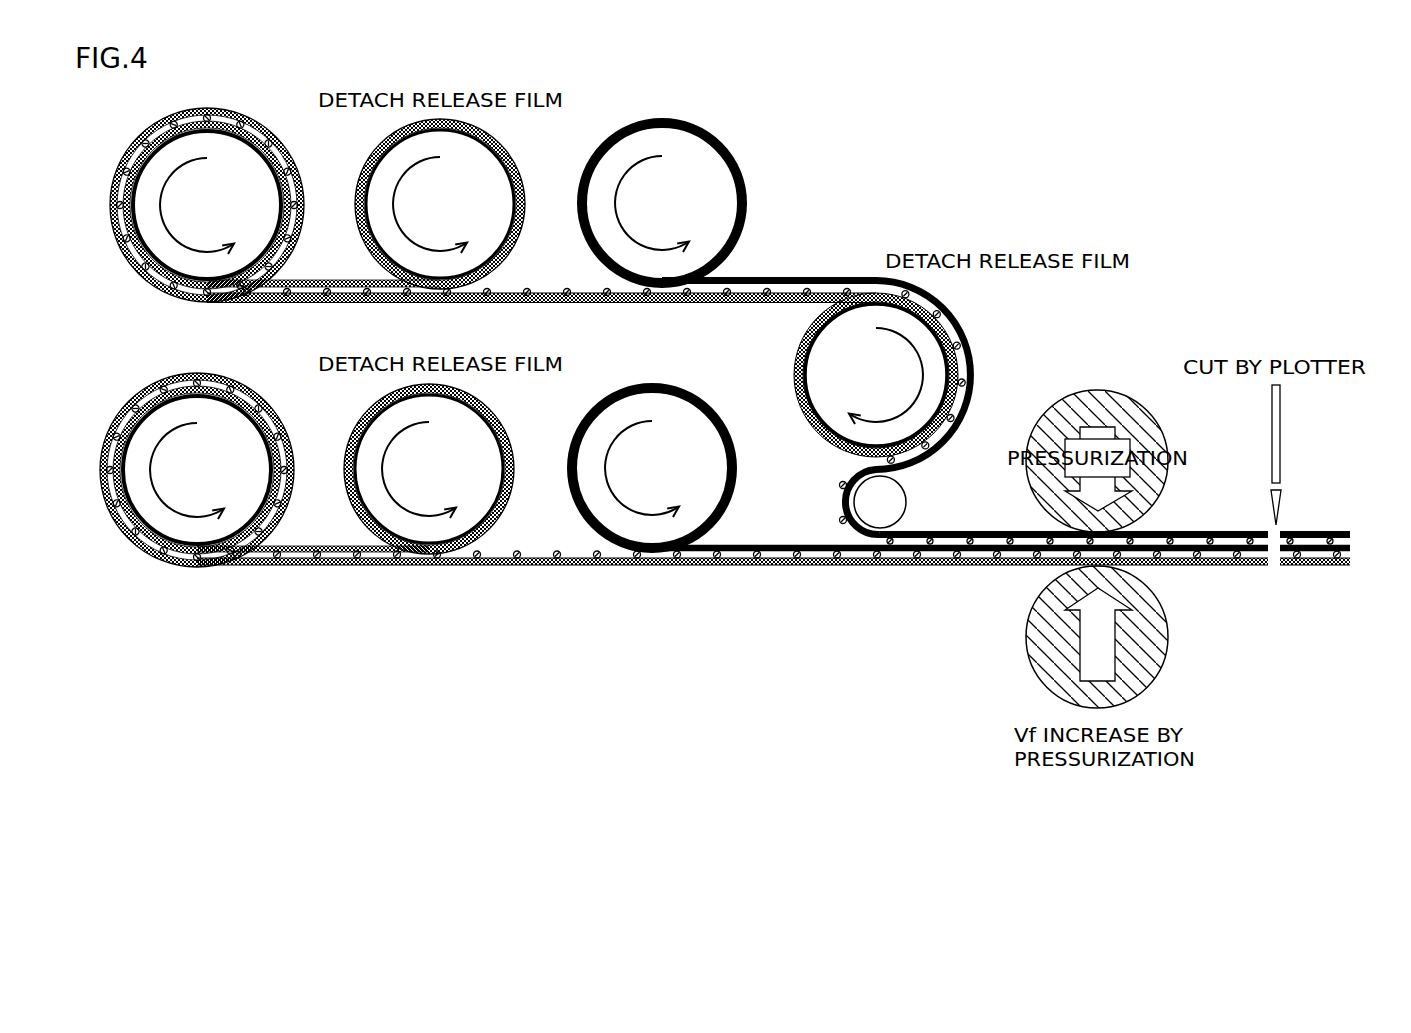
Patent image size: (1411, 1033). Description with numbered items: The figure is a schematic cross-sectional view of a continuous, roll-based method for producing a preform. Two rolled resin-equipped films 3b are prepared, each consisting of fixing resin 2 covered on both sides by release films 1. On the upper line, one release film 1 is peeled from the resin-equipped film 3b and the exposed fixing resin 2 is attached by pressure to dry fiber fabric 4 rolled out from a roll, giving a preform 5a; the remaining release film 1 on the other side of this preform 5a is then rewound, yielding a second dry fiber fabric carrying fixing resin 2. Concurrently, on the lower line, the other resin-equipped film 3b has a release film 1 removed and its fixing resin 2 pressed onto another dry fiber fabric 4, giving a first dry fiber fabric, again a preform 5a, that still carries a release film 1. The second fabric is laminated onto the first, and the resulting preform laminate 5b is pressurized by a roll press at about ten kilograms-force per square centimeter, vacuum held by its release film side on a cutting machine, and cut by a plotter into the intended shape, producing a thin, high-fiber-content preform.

The release film 1 is at (337, 281).
The fixing resin 2 is at (531, 288).
The rolled resin-equipped film 3b is at (236, 101).
The dry fiber fabric 4 is at (705, 128).
The preform 5a is at (770, 270).
The preform laminate 5b is at (944, 521).